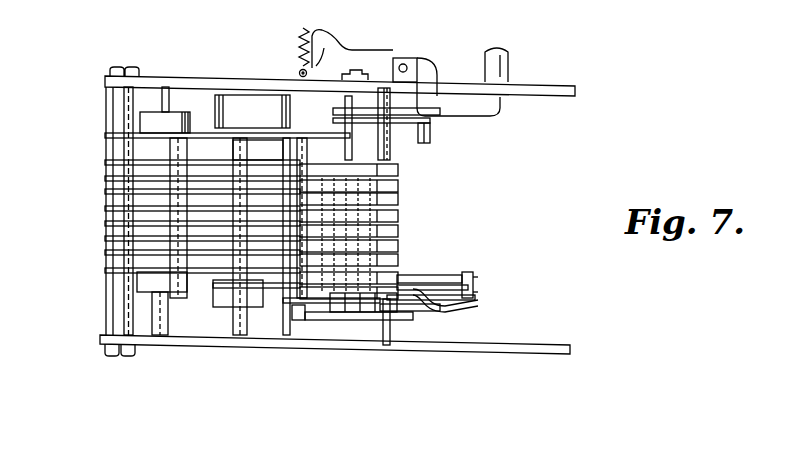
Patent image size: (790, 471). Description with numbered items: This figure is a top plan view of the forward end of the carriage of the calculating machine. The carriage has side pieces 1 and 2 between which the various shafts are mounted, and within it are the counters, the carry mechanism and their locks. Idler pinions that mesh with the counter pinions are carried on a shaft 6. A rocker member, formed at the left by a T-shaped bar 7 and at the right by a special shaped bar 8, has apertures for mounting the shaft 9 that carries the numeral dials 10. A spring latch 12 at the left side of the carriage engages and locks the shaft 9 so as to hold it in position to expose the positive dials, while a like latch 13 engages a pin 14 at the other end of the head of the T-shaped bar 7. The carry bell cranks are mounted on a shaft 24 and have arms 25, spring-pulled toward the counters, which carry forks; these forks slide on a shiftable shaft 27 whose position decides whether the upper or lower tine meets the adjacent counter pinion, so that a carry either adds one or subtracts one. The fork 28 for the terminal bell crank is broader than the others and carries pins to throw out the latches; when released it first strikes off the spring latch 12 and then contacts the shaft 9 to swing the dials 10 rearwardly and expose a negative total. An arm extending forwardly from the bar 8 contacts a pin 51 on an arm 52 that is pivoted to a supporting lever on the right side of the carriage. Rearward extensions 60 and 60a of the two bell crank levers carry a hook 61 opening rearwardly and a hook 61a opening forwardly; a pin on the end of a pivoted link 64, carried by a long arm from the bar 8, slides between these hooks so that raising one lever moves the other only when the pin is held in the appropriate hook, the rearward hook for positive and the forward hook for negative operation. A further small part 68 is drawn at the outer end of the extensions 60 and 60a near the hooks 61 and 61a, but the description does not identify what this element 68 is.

The side piece 1 is at (473, 346).
The side piece 2 is at (252, 88).
The shaft 6 is at (378, 135).
The T-shaped bar 7 is at (402, 117).
The special shaped bar 8 is at (313, 318).
The shaft 9 is at (348, 133).
The numeral dials 10 is at (398, 188).
The spring latch 12 is at (330, 120).
The latch 13 is at (405, 124).
The pin 14 is at (431, 135).
The shaft 24 is at (164, 90).
The arms 25 is at (300, 162).
The shiftable shaft 27 is at (290, 273).
The fork 28 is at (208, 133).
The pin 51 is at (298, 320).
The arm 52 is at (320, 301).
The arm 60 is at (402, 275).
The arm 60a is at (433, 299).
The hook 61 is at (447, 280).
The hook 61a is at (478, 289).
The pivoted link 64 is at (432, 309).
The nut 68 is at (472, 273).